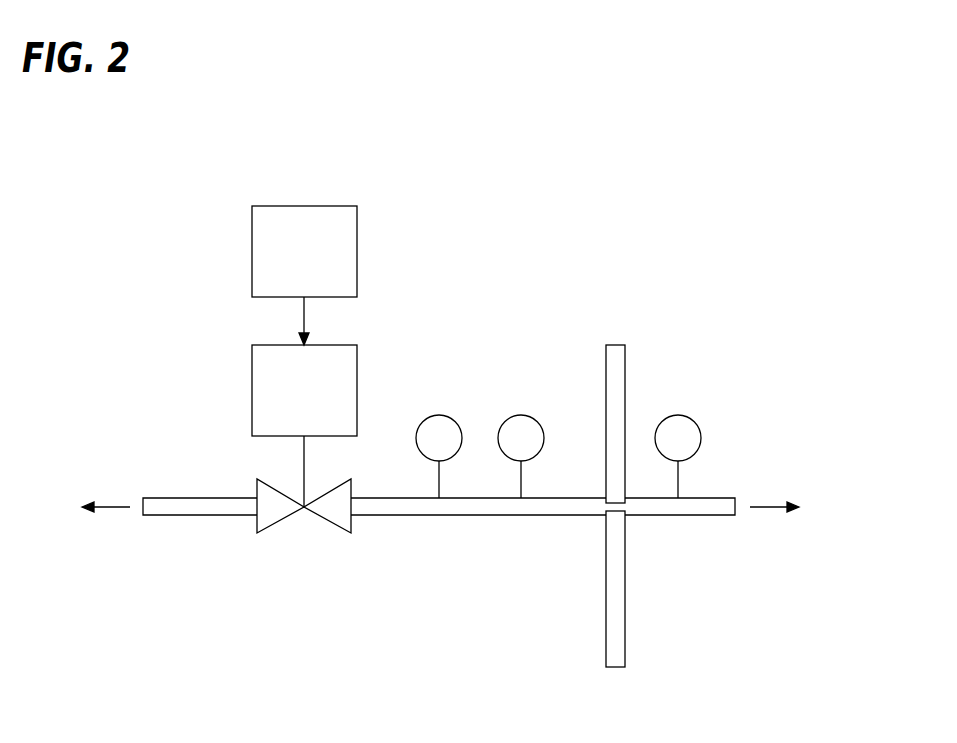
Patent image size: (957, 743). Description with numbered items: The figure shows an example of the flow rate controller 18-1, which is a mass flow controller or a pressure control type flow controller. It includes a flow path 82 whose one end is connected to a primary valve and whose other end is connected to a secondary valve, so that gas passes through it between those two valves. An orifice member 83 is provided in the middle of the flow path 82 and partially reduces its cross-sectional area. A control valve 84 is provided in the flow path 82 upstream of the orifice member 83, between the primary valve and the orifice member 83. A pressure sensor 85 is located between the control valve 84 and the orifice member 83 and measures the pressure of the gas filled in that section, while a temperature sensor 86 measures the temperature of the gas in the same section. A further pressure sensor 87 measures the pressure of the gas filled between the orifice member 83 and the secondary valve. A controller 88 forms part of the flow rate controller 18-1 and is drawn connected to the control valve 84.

The flow rate controller 18-1 is at (668, 220).
The flow path 82 is at (503, 516).
The orifice member 83 is at (625, 362).
The control valve 84 is at (328, 523).
The pressure sensor 85 is at (439, 415).
The temperature sensor 86 is at (521, 415).
The pressure sensor 87 is at (701, 436).
The controller 88 is at (357, 248).